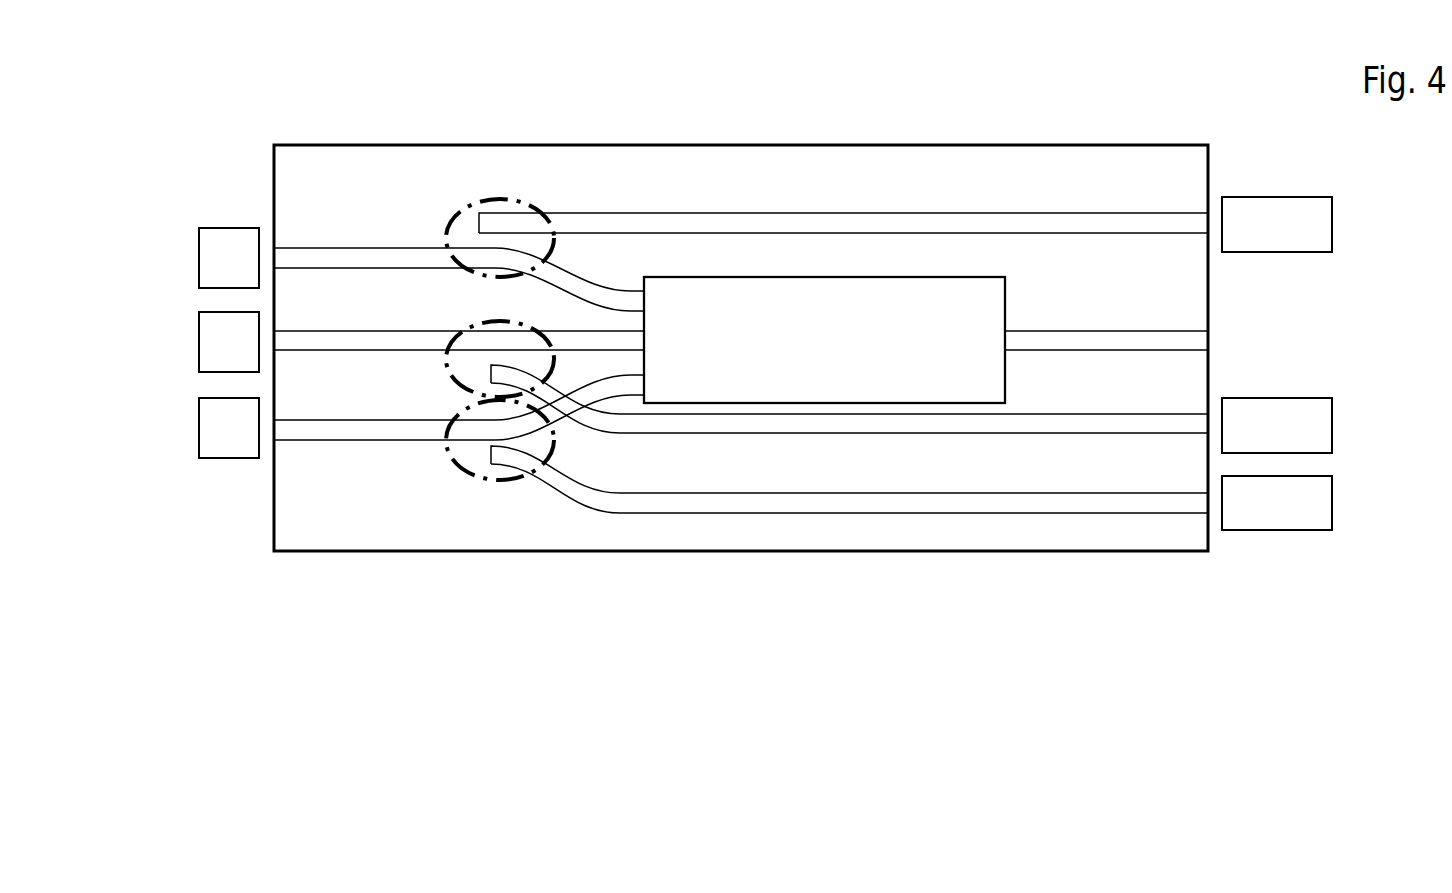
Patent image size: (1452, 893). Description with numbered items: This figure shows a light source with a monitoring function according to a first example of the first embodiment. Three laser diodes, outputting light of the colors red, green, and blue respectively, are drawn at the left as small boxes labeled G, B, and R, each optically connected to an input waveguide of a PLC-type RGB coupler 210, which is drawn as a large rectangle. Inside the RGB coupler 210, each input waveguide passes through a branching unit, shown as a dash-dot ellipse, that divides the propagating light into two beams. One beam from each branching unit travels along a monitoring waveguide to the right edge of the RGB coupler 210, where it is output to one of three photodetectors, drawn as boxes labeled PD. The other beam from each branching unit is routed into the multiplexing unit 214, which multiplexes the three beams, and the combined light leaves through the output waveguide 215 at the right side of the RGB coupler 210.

The PLC-type RGB coupler 210 is at (1035, 145).
The multiplexing unit 214 is at (930, 277).
The output waveguide 215 is at (1070, 339).